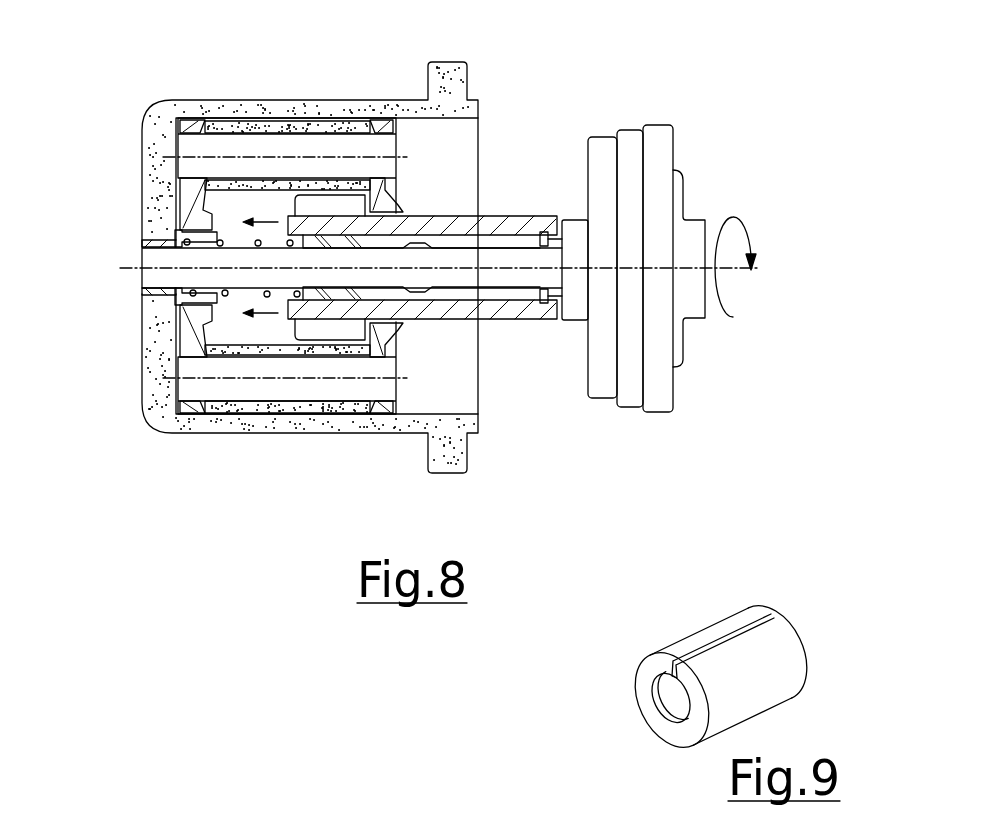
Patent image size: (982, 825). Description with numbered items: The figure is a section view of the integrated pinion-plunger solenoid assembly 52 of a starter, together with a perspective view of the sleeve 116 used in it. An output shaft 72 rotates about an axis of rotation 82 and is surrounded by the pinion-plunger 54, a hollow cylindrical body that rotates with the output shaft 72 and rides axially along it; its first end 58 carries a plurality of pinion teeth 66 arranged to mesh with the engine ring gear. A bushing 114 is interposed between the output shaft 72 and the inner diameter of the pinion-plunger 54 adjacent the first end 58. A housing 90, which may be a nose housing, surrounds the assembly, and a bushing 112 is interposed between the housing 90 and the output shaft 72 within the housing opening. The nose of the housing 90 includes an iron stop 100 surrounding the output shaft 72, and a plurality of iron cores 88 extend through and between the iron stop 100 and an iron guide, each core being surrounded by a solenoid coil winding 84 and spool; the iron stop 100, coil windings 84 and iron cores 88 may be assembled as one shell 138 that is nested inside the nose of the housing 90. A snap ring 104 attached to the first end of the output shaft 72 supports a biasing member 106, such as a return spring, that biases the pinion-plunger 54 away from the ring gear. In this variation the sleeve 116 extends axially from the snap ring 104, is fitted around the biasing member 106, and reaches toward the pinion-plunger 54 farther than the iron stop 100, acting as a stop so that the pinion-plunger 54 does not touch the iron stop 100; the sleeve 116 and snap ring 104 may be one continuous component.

In FIG. 8, the integrated pinion-plunger solenoid assembly 52 is at (493, 60).
In FIG. 8, the pinion-plunger 54 is at (497, 225).
In FIG. 8, the first end of the pinion-plunger 58 is at (286, 200).
In FIG. 8, the pinion teeth 66 is at (333, 207).
In FIG. 8, the output shaft 72 is at (473, 282).
In FIG. 8, the axis of rotation 82 is at (697, 267).
In FIG. 8, the solenoid coil winding 84 is at (338, 410).
In FIG. 8, the iron cores 88 is at (267, 385).
In FIG. 8, the housing 90 is at (170, 108).
In FIG. 8, the iron stop 100 is at (193, 195).
In FIG. 8, the snap ring 104 is at (177, 230).
In FIG. 9, the snap ring 104 is at (677, 732).
In FIG. 8, the biasing member 106 is at (225, 296).
In FIG. 8, the bushing 112 is at (160, 293).
In FIG. 8, the bushing 114 is at (350, 303).
In FIG. 8, the sleeve 116 is at (193, 303).
In FIG. 9, the sleeve 116 is at (792, 594).
In FIG. 8, the shell 138 is at (192, 420).